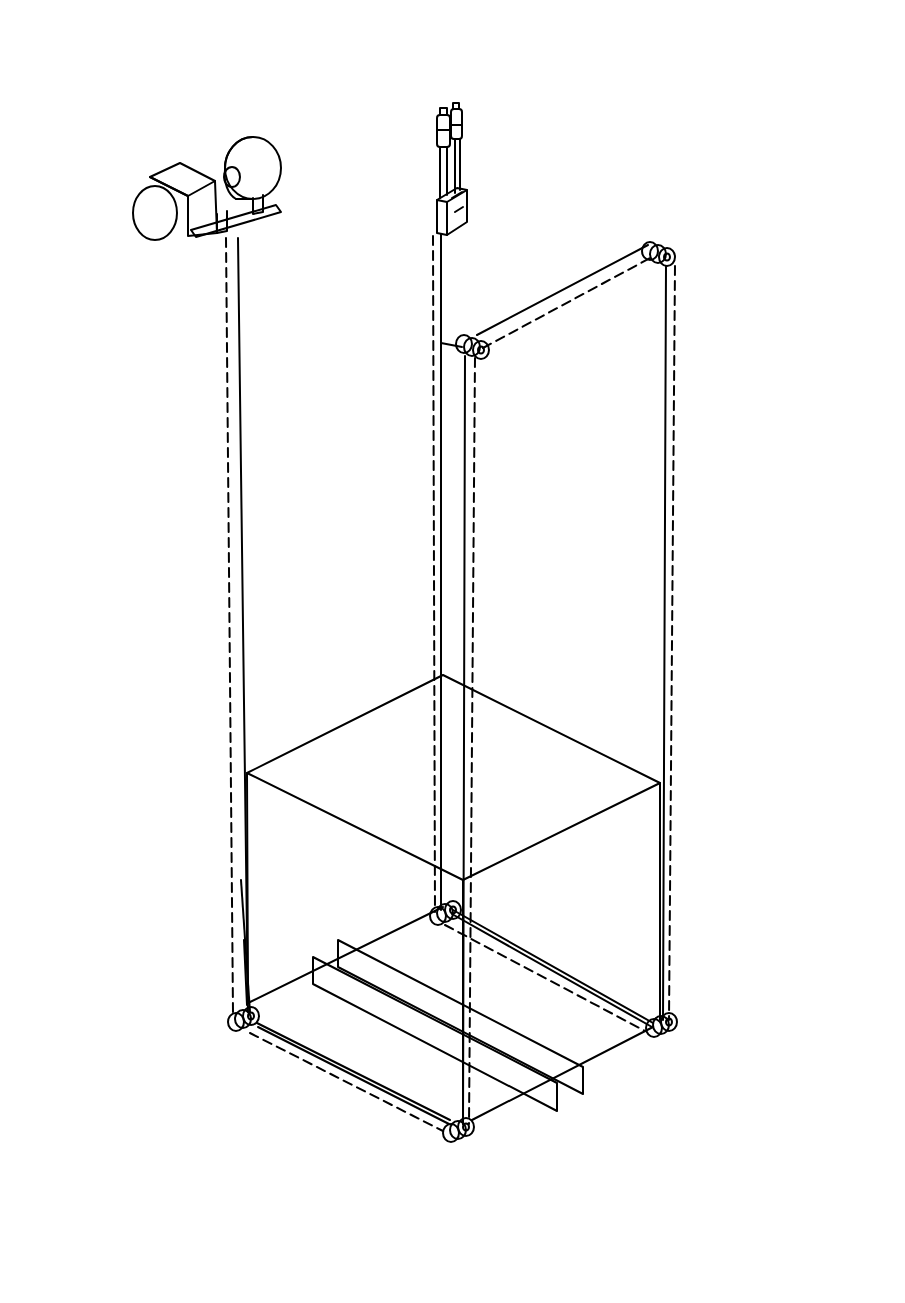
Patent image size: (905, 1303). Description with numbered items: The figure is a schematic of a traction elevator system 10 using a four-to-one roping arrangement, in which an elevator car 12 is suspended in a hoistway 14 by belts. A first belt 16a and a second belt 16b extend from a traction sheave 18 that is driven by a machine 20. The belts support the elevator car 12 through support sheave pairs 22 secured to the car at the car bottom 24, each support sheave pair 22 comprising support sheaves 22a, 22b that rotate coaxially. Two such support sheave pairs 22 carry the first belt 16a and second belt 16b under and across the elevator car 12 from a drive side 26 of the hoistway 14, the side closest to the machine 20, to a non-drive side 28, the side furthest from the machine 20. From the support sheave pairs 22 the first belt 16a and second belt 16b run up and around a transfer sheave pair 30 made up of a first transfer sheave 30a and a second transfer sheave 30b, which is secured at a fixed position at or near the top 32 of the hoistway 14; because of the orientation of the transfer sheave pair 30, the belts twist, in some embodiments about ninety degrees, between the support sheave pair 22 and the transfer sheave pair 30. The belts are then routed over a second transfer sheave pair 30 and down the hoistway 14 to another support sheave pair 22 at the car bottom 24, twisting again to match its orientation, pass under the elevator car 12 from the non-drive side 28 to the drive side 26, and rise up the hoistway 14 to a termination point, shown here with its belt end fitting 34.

The traction elevator system 10 is at (176, 30).
The elevator car 12 is at (290, 777).
The hoistway 14 is at (146, 296).
The first belt 16a is at (226, 440).
The second belt 16b is at (242, 400).
The traction sheave 18 is at (245, 147).
The machine 20 is at (170, 178).
The support sheave pair 22 is at (433, 905).
The support sheave 22a is at (242, 1048).
The support sheave 22b is at (246, 1012).
The car bottom 24 is at (340, 1063).
The drive side 26 is at (244, 950).
The non-drive side 28 is at (660, 862).
The transfer sheave pair 30 is at (474, 330).
The first transfer sheave 30a is at (490, 355).
The second transfer sheave 30b is at (462, 342).
The top 32 is at (587, 156).
The cable connector 34 is at (440, 216).